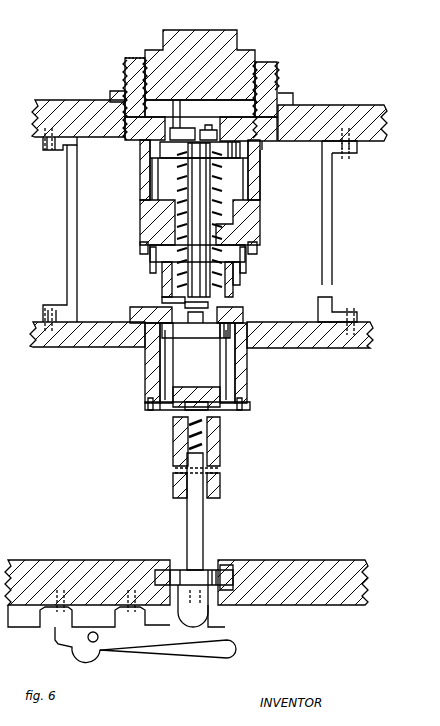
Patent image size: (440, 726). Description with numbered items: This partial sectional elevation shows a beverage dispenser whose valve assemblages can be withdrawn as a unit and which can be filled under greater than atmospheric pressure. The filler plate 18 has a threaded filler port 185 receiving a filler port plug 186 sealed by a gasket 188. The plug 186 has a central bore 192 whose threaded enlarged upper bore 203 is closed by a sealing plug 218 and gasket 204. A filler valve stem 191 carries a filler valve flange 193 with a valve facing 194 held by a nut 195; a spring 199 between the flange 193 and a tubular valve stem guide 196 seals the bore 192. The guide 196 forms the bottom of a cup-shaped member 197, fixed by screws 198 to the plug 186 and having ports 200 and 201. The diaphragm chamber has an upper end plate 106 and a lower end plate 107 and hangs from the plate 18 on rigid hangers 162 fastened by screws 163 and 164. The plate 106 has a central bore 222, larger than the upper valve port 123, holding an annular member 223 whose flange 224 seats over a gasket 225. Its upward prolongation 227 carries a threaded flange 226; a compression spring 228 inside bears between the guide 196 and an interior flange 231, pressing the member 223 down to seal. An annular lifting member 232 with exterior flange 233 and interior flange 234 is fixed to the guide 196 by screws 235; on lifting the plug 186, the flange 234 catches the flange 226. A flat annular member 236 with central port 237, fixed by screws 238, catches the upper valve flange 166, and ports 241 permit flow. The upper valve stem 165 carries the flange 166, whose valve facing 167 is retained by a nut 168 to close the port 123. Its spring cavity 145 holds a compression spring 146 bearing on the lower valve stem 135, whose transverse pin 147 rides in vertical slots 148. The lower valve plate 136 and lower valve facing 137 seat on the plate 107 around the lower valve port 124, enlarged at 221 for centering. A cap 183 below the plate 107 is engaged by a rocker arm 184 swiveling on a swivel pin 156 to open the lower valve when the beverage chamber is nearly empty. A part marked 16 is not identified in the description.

The filler plate 18 is at (42, 108).
The central bore 192 is at (290, 98).
The sealing plug 218 is at (163, 32).
The gasket 204 is at (127, 58).
The filler port plug 186 is at (125, 64).
The gasket 188 is at (112, 96).
The filler port 185 is at (125, 110).
The enlarged upper bore 203 is at (278, 80).
The nut 195 is at (160, 150).
The valve facing 194 is at (140, 165).
The filler valve flange 193 is at (152, 180).
The tubular valve stem guide 196 is at (140, 215).
The spring 199 is at (212, 219).
The screws 198 is at (262, 147).
The ports 200 is at (262, 160).
The cup-shaped member 197 is at (262, 180).
The ports 201 is at (262, 195).
The screws 235 is at (140, 248).
The exterior encircling flange 233 is at (257, 250).
The filler valve stem 191 is at (162, 262).
The exterior encircling internally threaded flange 226 is at (150, 268).
The upward prolongation 227 is at (162, 297).
The upper valve port 123 is at (185, 305).
The encircling flange 224 is at (162, 330).
The annular lifting member 232 is at (246, 258).
The interior encircling flange 234 is at (240, 270).
The compression spring 228 is at (233, 284).
The interior flange 231 is at (243, 308).
The gasket 225 is at (100, 347).
The upper end plate 106 is at (340, 345).
The ports 241 is at (147, 358).
The valve facing 167 is at (160, 375).
The annular member 223 is at (145, 398).
The flat annular member 236 is at (148, 405).
The screws 238 is at (160, 408).
The central port 237 is at (173, 407).
The central bore 222 is at (247, 345).
The nut 168 is at (235, 355).
The upper valve flange 166 is at (235, 380).
The upper valve stem 165 is at (220, 425).
The spring cavity 145 is at (203, 433).
The compression spring 146 is at (205, 450).
The transverse pin 147 is at (173, 478).
The vertical slots 148 is at (220, 480).
The lower valve stem 135 is at (187, 510).
The enlargement 221 is at (158, 572).
The lower valve plate 136 is at (210, 570).
The lower valve facing 137 is at (228, 575).
The lower end plate 107 is at (335, 570).
The lower valve port 124 is at (205, 605).
The nut or cap 183 is at (218, 628).
The rocker arm 184 is at (232, 655).
The swivel pin 156 is at (88, 640).
The screws 163 is at (47, 152).
The rigid hangers 162 is at (67, 228).
The screws 164 is at (44, 310).
The frame 16 is at (8, 290).